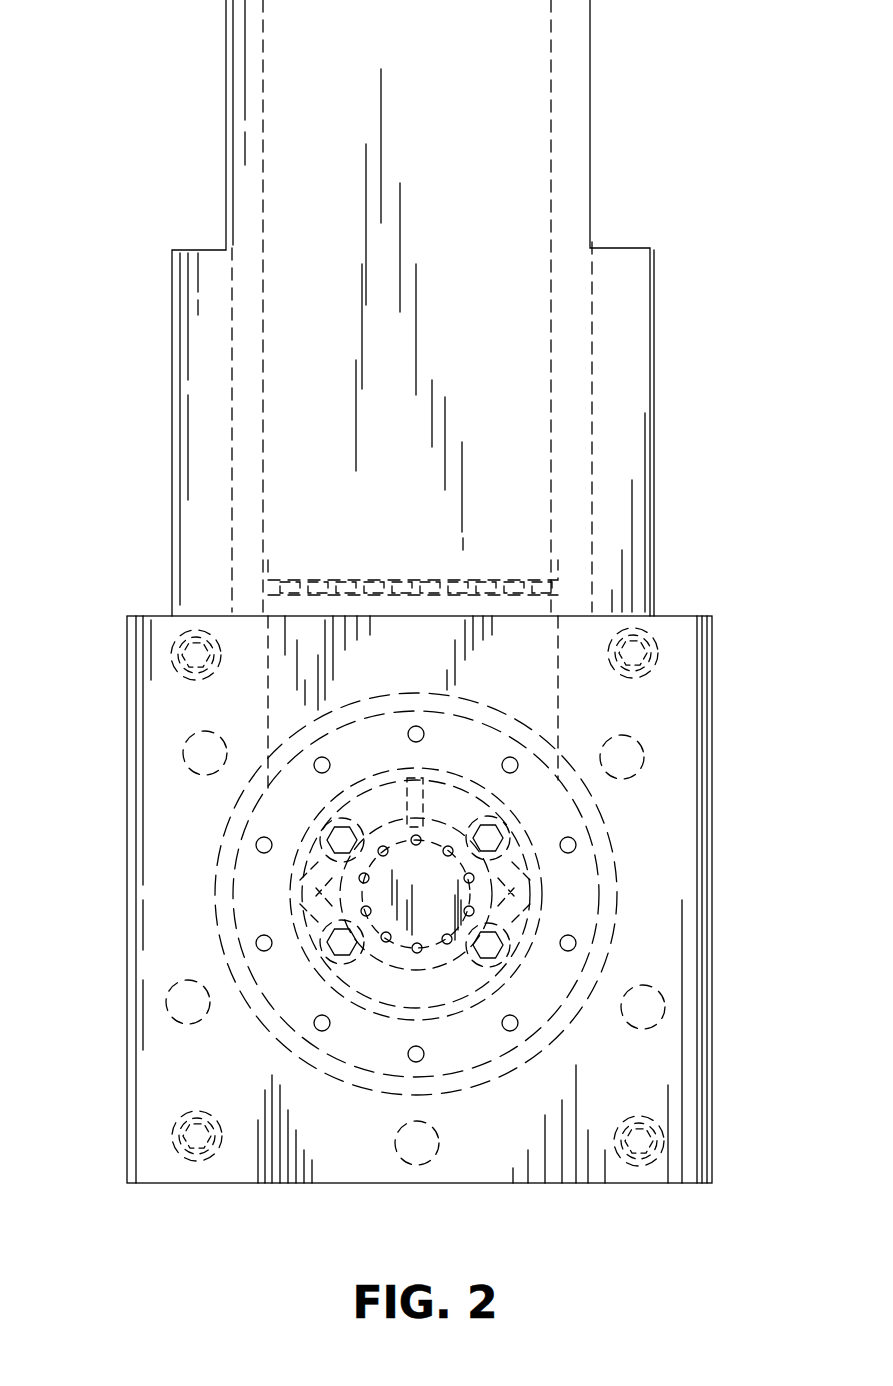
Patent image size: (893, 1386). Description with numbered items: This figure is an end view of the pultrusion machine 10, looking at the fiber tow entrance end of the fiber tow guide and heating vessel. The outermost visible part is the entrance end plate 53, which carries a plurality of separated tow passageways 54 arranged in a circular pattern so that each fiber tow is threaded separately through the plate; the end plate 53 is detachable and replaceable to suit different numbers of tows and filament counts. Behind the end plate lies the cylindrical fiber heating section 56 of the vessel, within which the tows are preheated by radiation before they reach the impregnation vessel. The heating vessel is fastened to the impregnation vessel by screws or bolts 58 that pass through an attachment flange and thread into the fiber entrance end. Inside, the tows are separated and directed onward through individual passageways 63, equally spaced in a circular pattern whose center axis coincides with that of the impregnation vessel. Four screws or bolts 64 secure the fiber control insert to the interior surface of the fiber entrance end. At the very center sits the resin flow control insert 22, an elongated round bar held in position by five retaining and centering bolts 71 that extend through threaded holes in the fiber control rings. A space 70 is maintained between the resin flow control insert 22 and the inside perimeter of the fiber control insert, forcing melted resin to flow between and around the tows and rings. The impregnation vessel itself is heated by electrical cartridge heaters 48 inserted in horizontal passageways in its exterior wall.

The robotic arm assembly 10 is at (668, 342).
The entrance end plate 53 is at (683, 614).
The fiber heating section 56 is at (612, 882).
The resin flow control insert 22 is at (360, 893).
The tow passageways 54 is at (420, 1062).
The passageways 63 is at (480, 909).
The screws or bolts 64 is at (332, 838).
The space 70 is at (443, 828).
The retaining and centering bolts 71 is at (432, 838).
The screws or bolts 58 is at (653, 1143).
The electrical cartridge heaters 48 is at (184, 751).